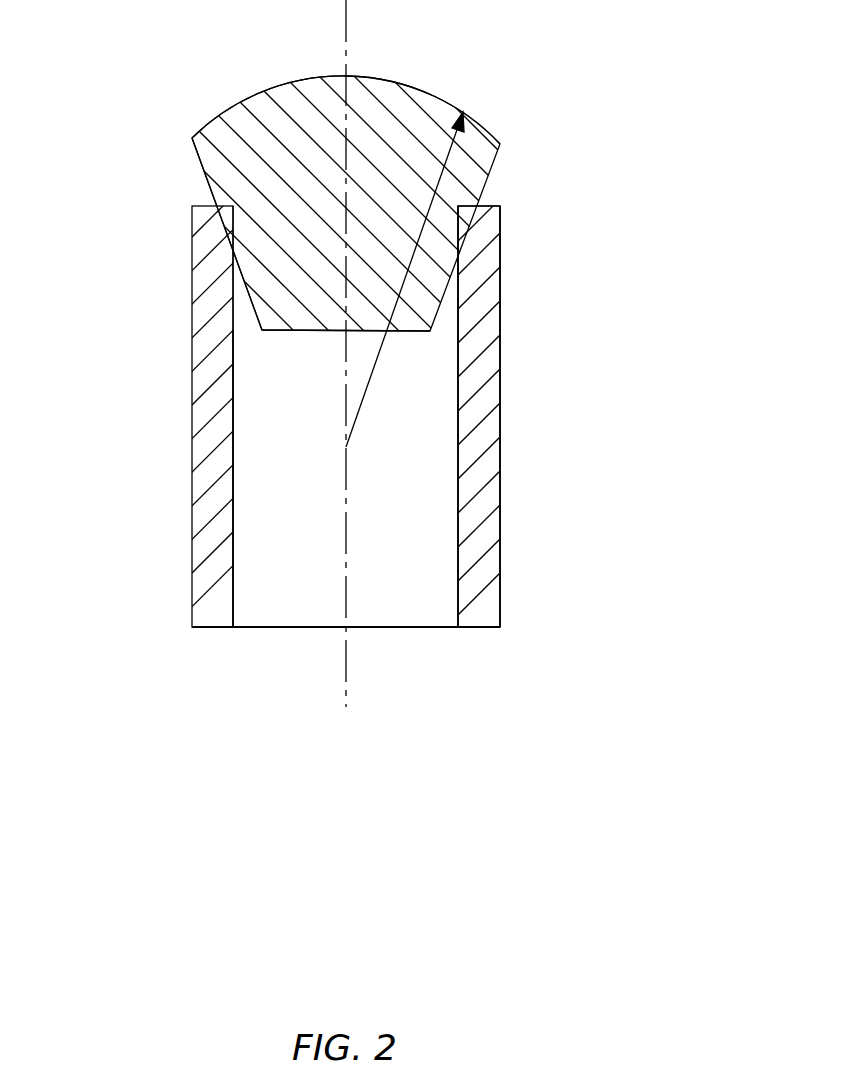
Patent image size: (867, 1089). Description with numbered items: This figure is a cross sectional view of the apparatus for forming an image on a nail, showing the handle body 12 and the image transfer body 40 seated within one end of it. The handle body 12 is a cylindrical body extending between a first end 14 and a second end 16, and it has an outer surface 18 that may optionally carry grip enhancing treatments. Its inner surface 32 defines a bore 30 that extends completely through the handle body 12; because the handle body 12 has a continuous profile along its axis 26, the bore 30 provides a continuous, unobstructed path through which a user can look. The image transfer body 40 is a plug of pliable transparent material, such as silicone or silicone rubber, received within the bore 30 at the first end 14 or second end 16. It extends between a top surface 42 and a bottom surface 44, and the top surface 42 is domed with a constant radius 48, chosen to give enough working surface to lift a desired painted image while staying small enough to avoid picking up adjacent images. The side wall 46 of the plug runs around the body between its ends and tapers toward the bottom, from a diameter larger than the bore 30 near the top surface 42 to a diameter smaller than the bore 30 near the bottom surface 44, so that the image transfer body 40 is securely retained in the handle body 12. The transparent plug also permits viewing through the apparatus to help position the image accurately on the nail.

The handle body 12 is at (550, 497).
The first end 14 is at (502, 205).
The second end 16 is at (487, 630).
The outer surface 18 is at (502, 380).
The axis 26 is at (347, 670).
The bore 30 is at (303, 593).
The inner surface 32 is at (233, 580).
The image transfer body 40 is at (217, 140).
The top surface 42 is at (403, 80).
The bottom surface 44 is at (298, 333).
The side wall 46 is at (207, 180).
The radius 48 is at (500, 140).